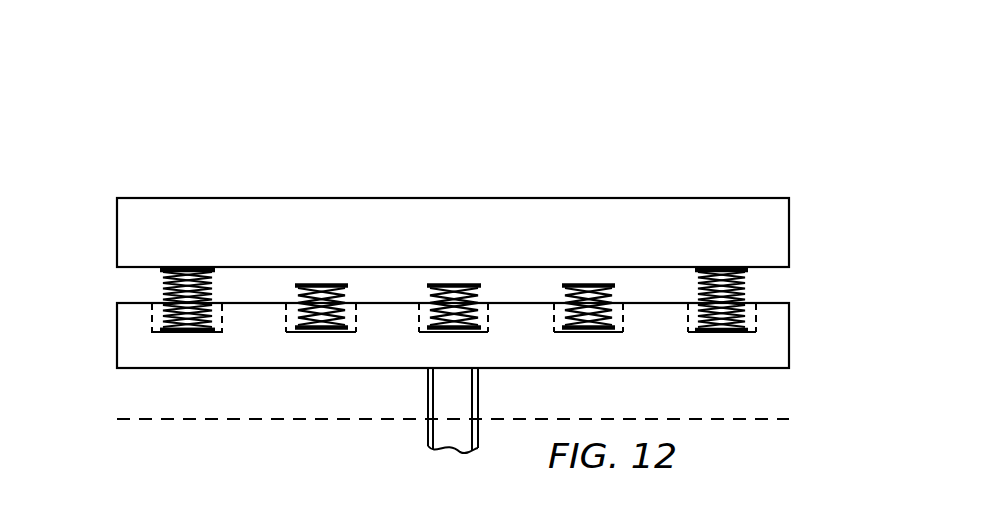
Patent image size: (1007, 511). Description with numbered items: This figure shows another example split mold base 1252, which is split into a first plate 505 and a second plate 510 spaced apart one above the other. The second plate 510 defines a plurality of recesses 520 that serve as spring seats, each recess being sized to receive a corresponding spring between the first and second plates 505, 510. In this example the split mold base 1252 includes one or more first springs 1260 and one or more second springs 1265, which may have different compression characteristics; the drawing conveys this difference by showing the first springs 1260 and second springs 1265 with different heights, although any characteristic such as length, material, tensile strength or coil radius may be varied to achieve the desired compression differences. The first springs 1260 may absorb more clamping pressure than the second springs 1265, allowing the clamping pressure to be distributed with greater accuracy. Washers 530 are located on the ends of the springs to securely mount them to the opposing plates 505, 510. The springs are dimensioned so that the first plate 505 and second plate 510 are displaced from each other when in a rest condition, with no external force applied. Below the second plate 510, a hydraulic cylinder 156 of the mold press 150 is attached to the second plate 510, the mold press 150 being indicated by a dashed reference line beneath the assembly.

The split mold base 1252 is at (164, 147).
The first plate 505 is at (117, 237).
The second plate 510 is at (117, 343).
The recesses 520 is at (155, 308).
The washers 530 is at (186, 267).
The first springs 1260 is at (182, 334).
The second springs 1265 is at (322, 334).
The mold press 150 is at (156, 430).
The hydraulic cylinder 156 is at (428, 432).